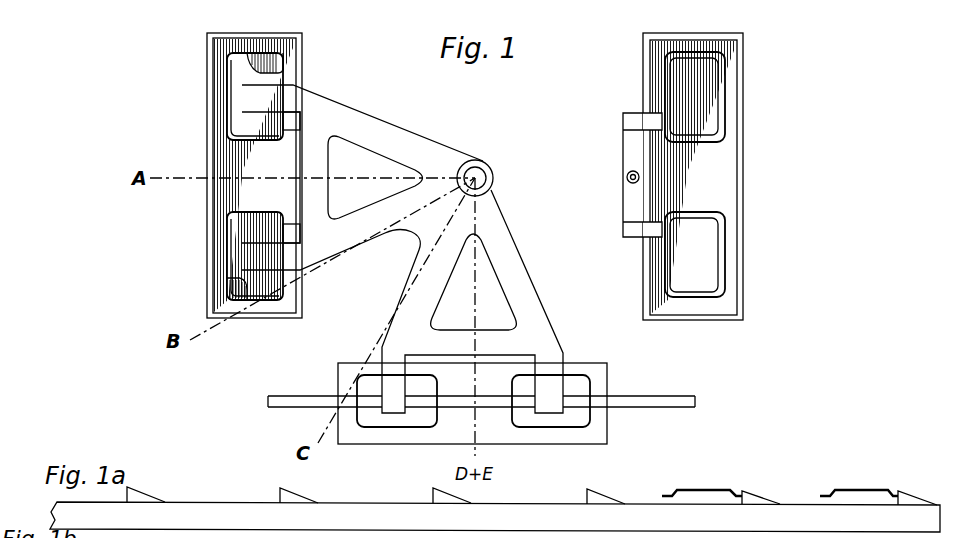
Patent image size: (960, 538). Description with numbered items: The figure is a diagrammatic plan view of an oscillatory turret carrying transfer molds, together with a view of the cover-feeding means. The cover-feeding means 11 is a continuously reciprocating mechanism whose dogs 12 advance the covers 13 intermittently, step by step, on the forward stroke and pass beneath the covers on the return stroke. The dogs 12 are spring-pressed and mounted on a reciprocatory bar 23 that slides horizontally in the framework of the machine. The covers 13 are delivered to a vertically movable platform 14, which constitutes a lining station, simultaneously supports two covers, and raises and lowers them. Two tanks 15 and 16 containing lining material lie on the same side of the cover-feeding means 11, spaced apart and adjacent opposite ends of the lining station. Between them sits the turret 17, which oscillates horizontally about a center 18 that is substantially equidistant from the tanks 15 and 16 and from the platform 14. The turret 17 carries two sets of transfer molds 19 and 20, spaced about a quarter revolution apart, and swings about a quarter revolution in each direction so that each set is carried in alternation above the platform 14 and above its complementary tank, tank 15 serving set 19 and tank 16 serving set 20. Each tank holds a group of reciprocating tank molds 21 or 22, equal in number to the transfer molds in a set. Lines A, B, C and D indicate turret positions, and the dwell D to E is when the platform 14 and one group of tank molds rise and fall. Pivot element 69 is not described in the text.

In FIG. 1, the cover-feeding means 11 is at (293, 378).
In FIG. 1A, the cover-feeding means 11 is at (798, 493).
In FIG. 1A, the dogs 12 is at (758, 481).
In FIG. 1A, the covers 13 is at (692, 481).
In FIG. 1, the vertically movable platform 14 is at (488, 415).
In FIG. 1, the tank 15 is at (253, 175).
In FIG. 1, the tank 16 is at (704, 176).
In FIG. 1, the turret 17 is at (401, 271).
In FIG. 1, the center 18 is at (498, 169).
In FIG. 1, the set of transfer molds 19 is at (237, 98).
In FIG. 1, the set of transfer molds 20 is at (390, 424).
In FIG. 1, the group of tank molds 21 is at (281, 58).
In FIG. 1, the group of tank molds 22 is at (719, 125).
In FIG. 1A, the reciprocatory bar 23 is at (495, 517).
In FIG. 1, the pivot pin 69 is at (491, 182).